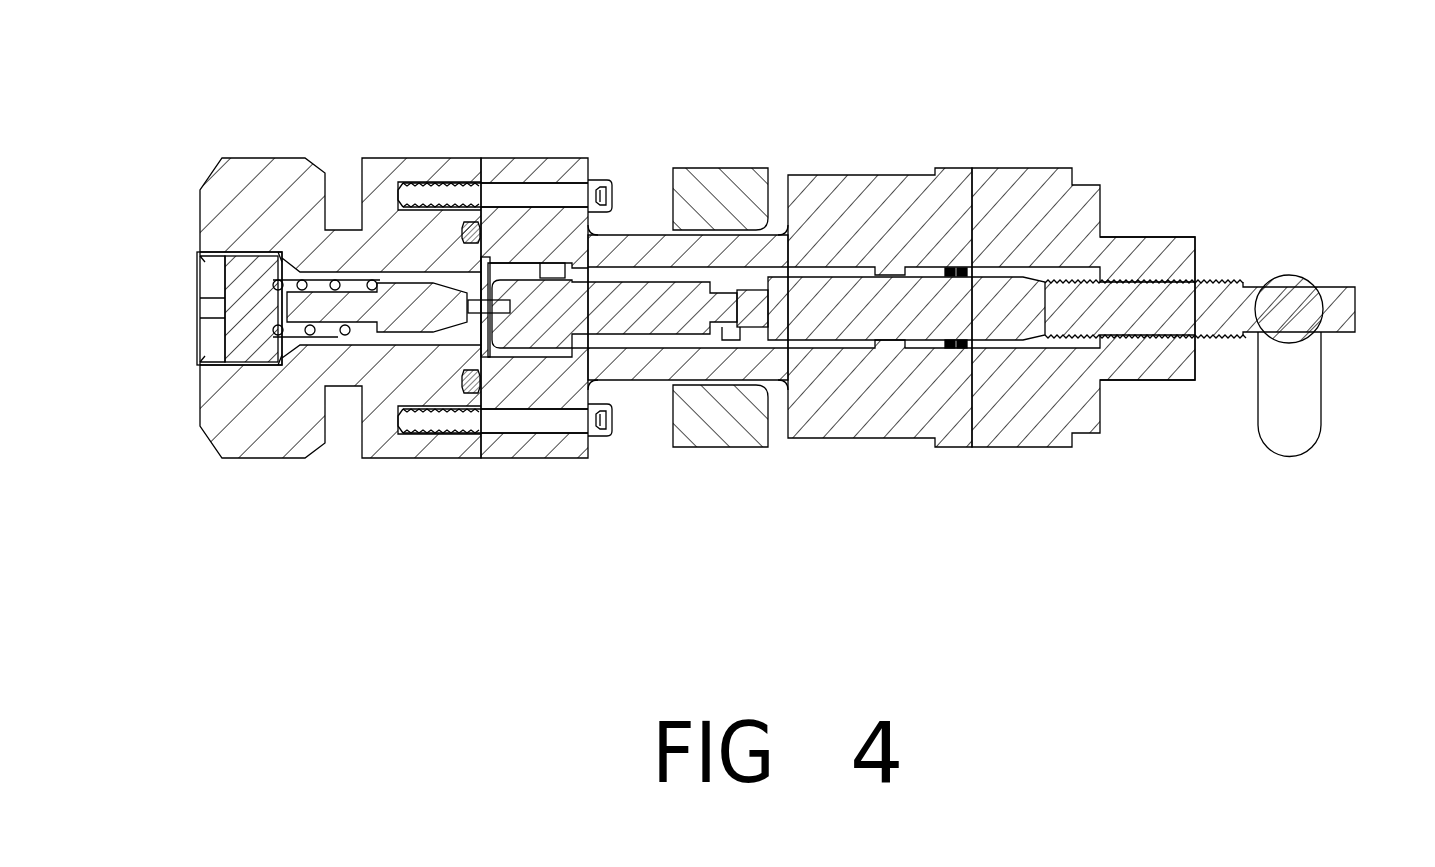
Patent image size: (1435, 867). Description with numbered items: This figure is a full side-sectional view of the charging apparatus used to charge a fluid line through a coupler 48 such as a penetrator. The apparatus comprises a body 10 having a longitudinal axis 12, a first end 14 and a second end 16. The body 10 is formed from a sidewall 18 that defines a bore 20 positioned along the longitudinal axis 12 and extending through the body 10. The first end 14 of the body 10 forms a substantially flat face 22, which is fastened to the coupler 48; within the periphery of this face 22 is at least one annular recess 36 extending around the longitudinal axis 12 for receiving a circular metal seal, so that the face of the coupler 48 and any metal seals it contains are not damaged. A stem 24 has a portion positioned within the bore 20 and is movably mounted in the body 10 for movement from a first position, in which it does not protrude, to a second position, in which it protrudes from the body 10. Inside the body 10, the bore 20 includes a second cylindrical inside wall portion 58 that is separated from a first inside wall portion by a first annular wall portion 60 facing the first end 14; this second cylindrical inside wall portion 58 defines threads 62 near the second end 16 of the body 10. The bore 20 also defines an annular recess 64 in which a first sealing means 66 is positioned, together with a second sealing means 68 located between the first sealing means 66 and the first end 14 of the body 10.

The body 10 is at (818, 438).
The longitudinal axis 12 is at (198, 277).
The first end 14 is at (505, 160).
The second end 16 is at (1140, 238).
The sidewall 18 is at (608, 243).
The bore 20 is at (620, 343).
The substantially flat face 22 is at (483, 453).
The stem 24 is at (1357, 312).
The annular recess 36 is at (455, 178).
The coupler 48 is at (262, 157).
The second cylindrical inside wall portion 58 is at (998, 340).
The first annular wall portion 60 is at (952, 270).
The threads 62 is at (1193, 285).
The annular recess 64 is at (970, 245).
The first sealing means 66 is at (947, 343).
The second sealing means 68 is at (962, 350).